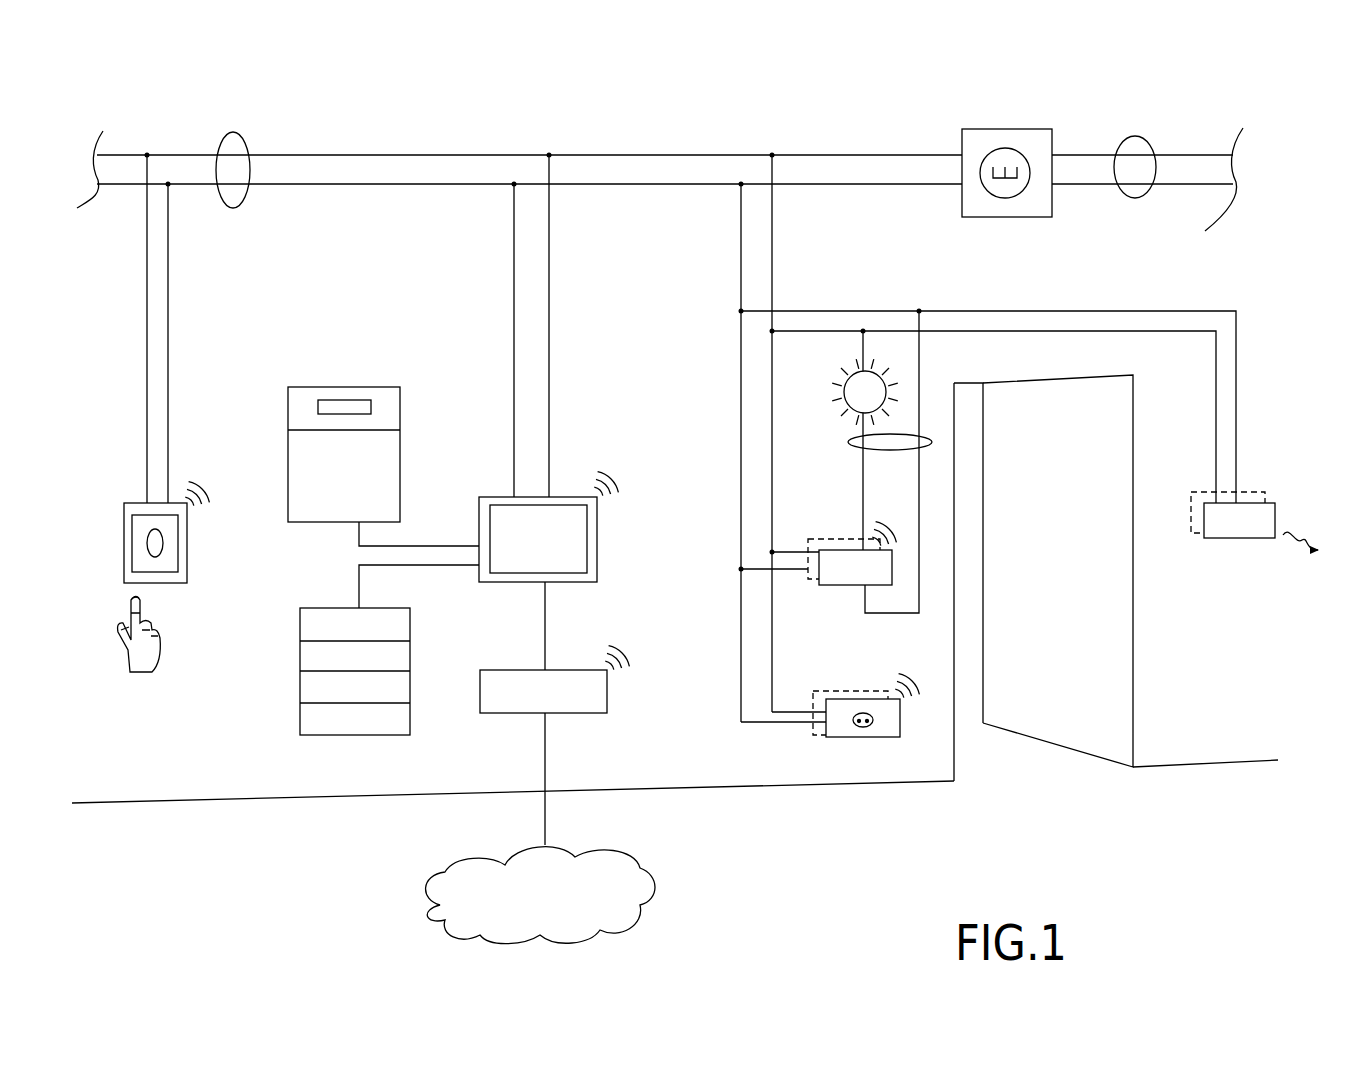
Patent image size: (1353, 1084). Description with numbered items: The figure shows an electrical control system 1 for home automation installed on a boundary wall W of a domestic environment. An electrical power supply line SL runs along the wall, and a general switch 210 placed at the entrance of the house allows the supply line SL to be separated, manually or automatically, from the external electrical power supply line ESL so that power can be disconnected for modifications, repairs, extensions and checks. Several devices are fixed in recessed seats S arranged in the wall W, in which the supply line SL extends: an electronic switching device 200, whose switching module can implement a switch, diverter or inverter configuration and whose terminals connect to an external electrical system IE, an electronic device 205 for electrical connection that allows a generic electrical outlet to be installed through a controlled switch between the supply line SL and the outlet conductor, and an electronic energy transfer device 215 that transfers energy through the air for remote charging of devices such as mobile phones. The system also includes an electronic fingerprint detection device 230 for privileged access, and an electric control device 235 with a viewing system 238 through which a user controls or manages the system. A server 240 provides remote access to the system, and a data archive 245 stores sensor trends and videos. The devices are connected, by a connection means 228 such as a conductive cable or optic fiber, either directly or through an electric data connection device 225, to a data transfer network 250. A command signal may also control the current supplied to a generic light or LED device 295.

The electrical control system 1 is at (358, 110).
The electrical power supply line SL is at (660, 187).
The external electrical power supply line ESL is at (1134, 183).
The general switch 210 is at (1003, 220).
The electronic fingerprint detection device 230 is at (180, 586).
The server 240 is at (286, 444).
The data archive 245 is at (298, 692).
The electric control device 235 is at (550, 470).
The viewing system 238 is at (508, 522).
The connection means 228 is at (545, 624).
The electric data connection device 225 is at (609, 695).
The data transfer network 250 is at (410, 890).
The boundary wall W is at (748, 765).
The LED device 295 is at (895, 377).
The external electrical system IE is at (870, 444).
The seat S is at (840, 539).
The electronic switching device 200 is at (845, 589).
The electronic device for electrical connection 205 is at (868, 743).
The electronic energy transfer device 215 is at (1238, 542).